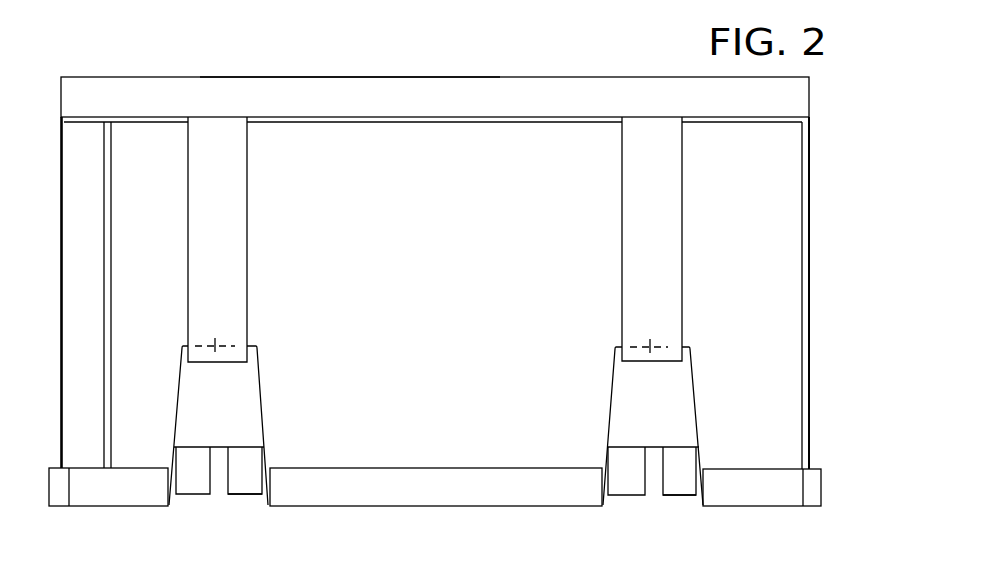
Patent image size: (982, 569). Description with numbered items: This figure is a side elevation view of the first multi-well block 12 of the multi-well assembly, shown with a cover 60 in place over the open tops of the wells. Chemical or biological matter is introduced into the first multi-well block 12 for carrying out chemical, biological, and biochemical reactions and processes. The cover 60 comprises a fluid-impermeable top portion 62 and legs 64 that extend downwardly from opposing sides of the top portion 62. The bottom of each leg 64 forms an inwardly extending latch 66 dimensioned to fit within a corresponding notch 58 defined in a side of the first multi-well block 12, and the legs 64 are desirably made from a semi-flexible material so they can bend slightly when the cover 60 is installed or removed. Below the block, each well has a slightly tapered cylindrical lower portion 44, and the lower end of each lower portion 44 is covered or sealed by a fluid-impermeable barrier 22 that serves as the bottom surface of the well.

The first multi-well block 12 is at (818, 274).
The fluid-impermeable barrier 22 is at (245, 495).
The cylindrical lower portion 44 is at (237, 483).
The notch 58 is at (237, 390).
The cover 60 is at (142, 70).
The top portion 62 is at (350, 77).
The leg 64 is at (230, 217).
The latch 66 is at (215, 346).